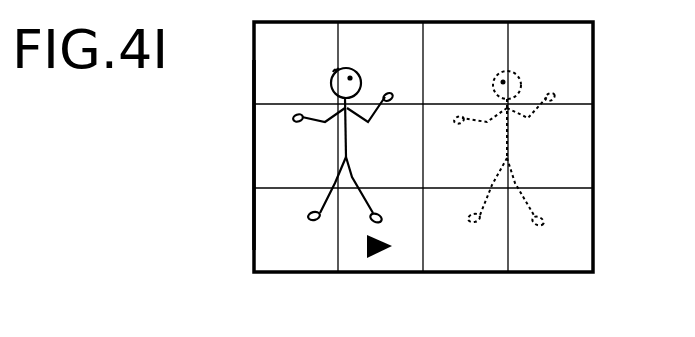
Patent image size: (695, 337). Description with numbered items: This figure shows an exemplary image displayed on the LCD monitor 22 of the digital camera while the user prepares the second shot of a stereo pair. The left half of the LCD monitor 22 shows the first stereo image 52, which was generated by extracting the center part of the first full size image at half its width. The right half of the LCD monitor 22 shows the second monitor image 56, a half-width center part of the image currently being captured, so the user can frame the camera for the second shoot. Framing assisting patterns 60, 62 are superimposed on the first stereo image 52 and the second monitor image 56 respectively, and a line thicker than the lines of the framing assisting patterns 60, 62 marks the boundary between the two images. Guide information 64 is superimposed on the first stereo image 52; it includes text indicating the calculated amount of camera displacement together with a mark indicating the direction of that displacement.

The LCD monitor 22 is at (595, 143).
The first stereo image 52 is at (265, 151).
The second monitor image 56 is at (571, 74).
The framing assisting pattern 60 is at (272, 188).
The framing assisting pattern 62 is at (573, 190).
The guide information 64 is at (317, 260).